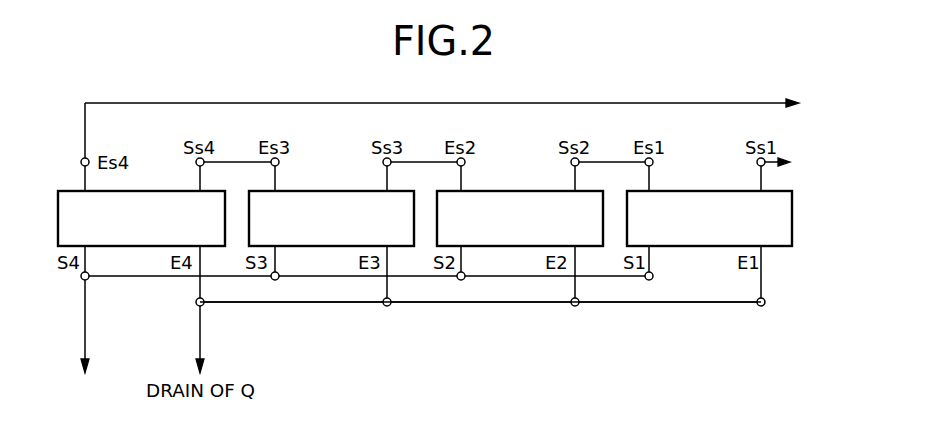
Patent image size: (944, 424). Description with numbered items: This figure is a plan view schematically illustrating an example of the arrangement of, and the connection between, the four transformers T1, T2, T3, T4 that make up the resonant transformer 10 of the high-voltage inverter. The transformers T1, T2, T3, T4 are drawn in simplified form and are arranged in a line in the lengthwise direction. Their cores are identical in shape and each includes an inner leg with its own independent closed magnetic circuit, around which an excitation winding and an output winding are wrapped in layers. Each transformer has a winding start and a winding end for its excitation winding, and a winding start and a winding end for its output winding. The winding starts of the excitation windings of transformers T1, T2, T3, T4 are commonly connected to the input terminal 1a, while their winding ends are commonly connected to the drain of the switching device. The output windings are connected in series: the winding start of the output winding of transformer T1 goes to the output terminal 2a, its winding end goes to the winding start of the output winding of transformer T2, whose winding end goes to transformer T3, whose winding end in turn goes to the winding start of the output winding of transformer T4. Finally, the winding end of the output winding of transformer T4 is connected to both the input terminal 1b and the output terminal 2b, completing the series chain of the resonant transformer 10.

The resonant transformer 10 is at (660, 325).
The input terminal 1a is at (88, 380).
The input terminal 1b is at (457, 94).
The output terminal 2a is at (790, 162).
The output terminal 2b is at (818, 110).
The transformer T1 is at (709, 218).
The transformer T2 is at (520, 218).
The transformer T3 is at (331, 218).
The transformer T4 is at (141, 218).